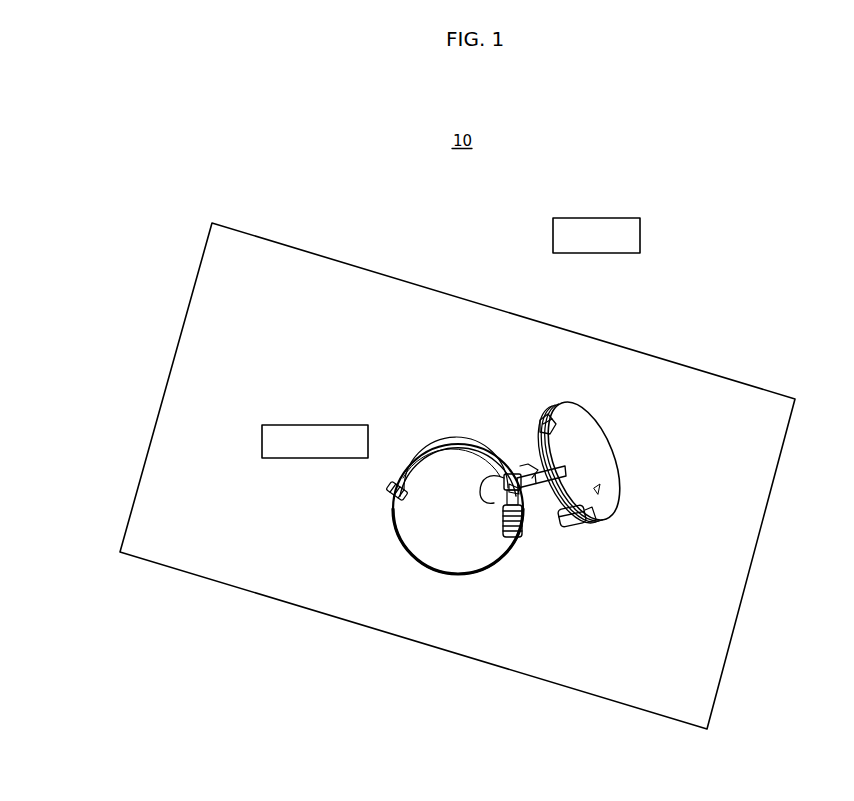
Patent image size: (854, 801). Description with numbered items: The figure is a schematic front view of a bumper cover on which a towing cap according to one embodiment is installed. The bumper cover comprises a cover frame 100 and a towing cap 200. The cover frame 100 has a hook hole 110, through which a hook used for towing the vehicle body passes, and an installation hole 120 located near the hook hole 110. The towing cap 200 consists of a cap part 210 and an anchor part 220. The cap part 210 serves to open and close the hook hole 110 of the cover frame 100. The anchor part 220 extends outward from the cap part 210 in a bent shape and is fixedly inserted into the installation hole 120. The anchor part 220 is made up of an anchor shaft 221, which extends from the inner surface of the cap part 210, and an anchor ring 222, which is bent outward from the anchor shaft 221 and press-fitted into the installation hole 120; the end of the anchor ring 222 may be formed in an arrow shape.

The cover frame 100 is at (192, 458).
The hook hole 110 is at (456, 561).
The installation hole 120 is at (481, 490).
The towing cap 200 is at (640, 443).
The cap part 210 is at (601, 482).
The anchor part 220 is at (543, 491).
The anchor shaft 221 is at (537, 470).
The anchor ring 222 is at (514, 476).